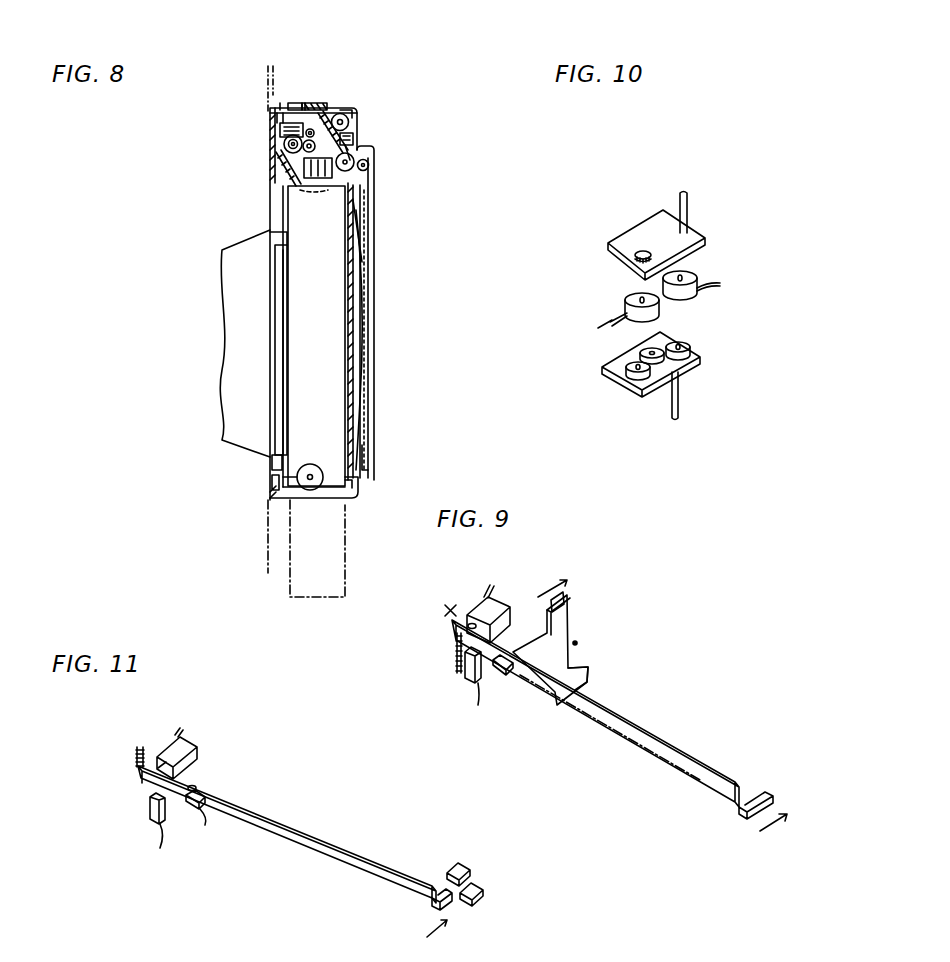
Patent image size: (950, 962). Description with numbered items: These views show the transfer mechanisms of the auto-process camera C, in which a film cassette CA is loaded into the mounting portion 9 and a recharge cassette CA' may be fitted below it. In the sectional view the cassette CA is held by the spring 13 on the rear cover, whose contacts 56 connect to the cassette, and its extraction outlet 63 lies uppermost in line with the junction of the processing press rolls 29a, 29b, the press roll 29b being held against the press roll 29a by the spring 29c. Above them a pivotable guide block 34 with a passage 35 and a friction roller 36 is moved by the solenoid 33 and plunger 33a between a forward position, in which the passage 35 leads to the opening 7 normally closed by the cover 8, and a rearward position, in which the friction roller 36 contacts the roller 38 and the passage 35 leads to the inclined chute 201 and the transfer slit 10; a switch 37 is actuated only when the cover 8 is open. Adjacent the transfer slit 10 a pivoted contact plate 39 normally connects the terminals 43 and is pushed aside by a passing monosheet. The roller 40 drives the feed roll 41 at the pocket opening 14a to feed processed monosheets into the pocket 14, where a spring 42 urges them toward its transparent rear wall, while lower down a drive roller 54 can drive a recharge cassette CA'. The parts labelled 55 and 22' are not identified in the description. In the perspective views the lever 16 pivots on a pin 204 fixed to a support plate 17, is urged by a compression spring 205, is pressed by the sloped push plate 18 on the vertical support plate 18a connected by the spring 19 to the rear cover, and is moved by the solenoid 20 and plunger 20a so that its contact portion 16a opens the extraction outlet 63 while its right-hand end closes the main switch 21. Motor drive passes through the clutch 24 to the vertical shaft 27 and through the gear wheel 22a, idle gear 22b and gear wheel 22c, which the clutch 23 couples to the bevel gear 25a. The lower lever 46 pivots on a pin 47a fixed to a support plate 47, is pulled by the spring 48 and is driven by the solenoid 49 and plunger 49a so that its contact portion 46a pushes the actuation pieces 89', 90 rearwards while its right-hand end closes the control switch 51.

In FIG. 8, the opening 7 is at (280, 103).
In FIG. 8, the cover 8 is at (307, 103).
In FIG. 8, the mounting portion 9 is at (283, 315).
In FIG. 8, the transfer slit 10 is at (374, 167).
In FIG. 8, the spring 13 is at (357, 333).
In FIG. 8, the pocket 14 is at (374, 373).
In FIG. 8, the pocket opening 14a is at (363, 450).
In FIG. 9, the lever 16 is at (633, 722).
In FIG. 9, the contact portion 16a is at (757, 802).
In FIG. 9, the support plate 17 is at (500, 673).
In FIG. 9, the push plate 18 is at (567, 623).
In FIG. 9, the vertical support plate 18a is at (593, 668).
In FIG. 9, the spring 19 is at (580, 643).
In FIG. 9, the solenoid 20 is at (497, 607).
In FIG. 9, the plunger 20a is at (470, 623).
In FIG. 9, the main switch 21 is at (472, 670).
In FIG. 10, the shaft 22' is at (689, 423).
In FIG. 10, the gear wheel 22a is at (693, 350).
In FIG. 10, the idle gear 22b is at (660, 383).
In FIG. 10, the gear wheel 22c is at (633, 383).
In FIG. 8, the clutch 23 is at (333, 493).
In FIG. 10, the clutch 23 is at (627, 303).
In FIG. 10, the clutch 24 is at (690, 297).
In FIG. 10, the bevel gear 25a is at (635, 256).
In FIG. 10, the shaft 27 is at (684, 193).
In FIG. 8, the processing press roll 29a is at (293, 147).
In FIG. 8, the processing press roll 29b is at (273, 160).
In FIG. 8, the spring 29c is at (298, 137).
In FIG. 8, the solenoid 33 is at (280, 127).
In FIG. 8, the plunger 33a is at (293, 103).
In FIG. 8, the guide block 34 is at (300, 103).
In FIG. 8, the passage 35 is at (312, 105).
In FIG. 8, the friction roller 36 is at (347, 107).
In FIG. 8, the switch 37 is at (277, 110).
In FIG. 8, the roller 38 is at (357, 118).
In FIG. 8, the contact plate 39 is at (360, 145).
In FIG. 8, the roller 40 is at (360, 183).
In FIG. 8, the feed roll 41 is at (370, 166).
In FIG. 8, the spring 42 is at (360, 213).
In FIG. 8, the terminals 43 is at (357, 132).
In FIG. 11, the lever 46 is at (300, 855).
In FIG. 11, the contact portion 46a is at (450, 907).
In FIG. 11, the support plate 47 is at (197, 803).
In FIG. 11, the pin 47a is at (197, 787).
In FIG. 11, the spring 48 is at (138, 755).
In FIG. 11, the solenoid 49 is at (187, 743).
In FIG. 11, the plunger 49a is at (160, 765).
In FIG. 11, the control switch 51 is at (150, 813).
In FIG. 8, the drive roller 54 is at (310, 490).
In FIG. 8, the bracket 55 is at (293, 503).
In FIG. 8, the contacts 56 is at (360, 480).
In FIG. 8, the extraction outlet 63 is at (303, 193).
In FIG. 11, the actuation piece 89' is at (455, 853).
In FIG. 11, the actuation piece 90 is at (483, 897).
In FIG. 8, the chute 201 is at (347, 112).
In FIG. 9, the pin 204 is at (503, 647).
In FIG. 9, the compression spring 205 is at (460, 643).
In FIG. 8, the auto-process camera C is at (237, 447).
In FIG. 8, the film cassette CA is at (356, 336).
In FIG. 8, the recharge cassette CA' is at (334, 548).